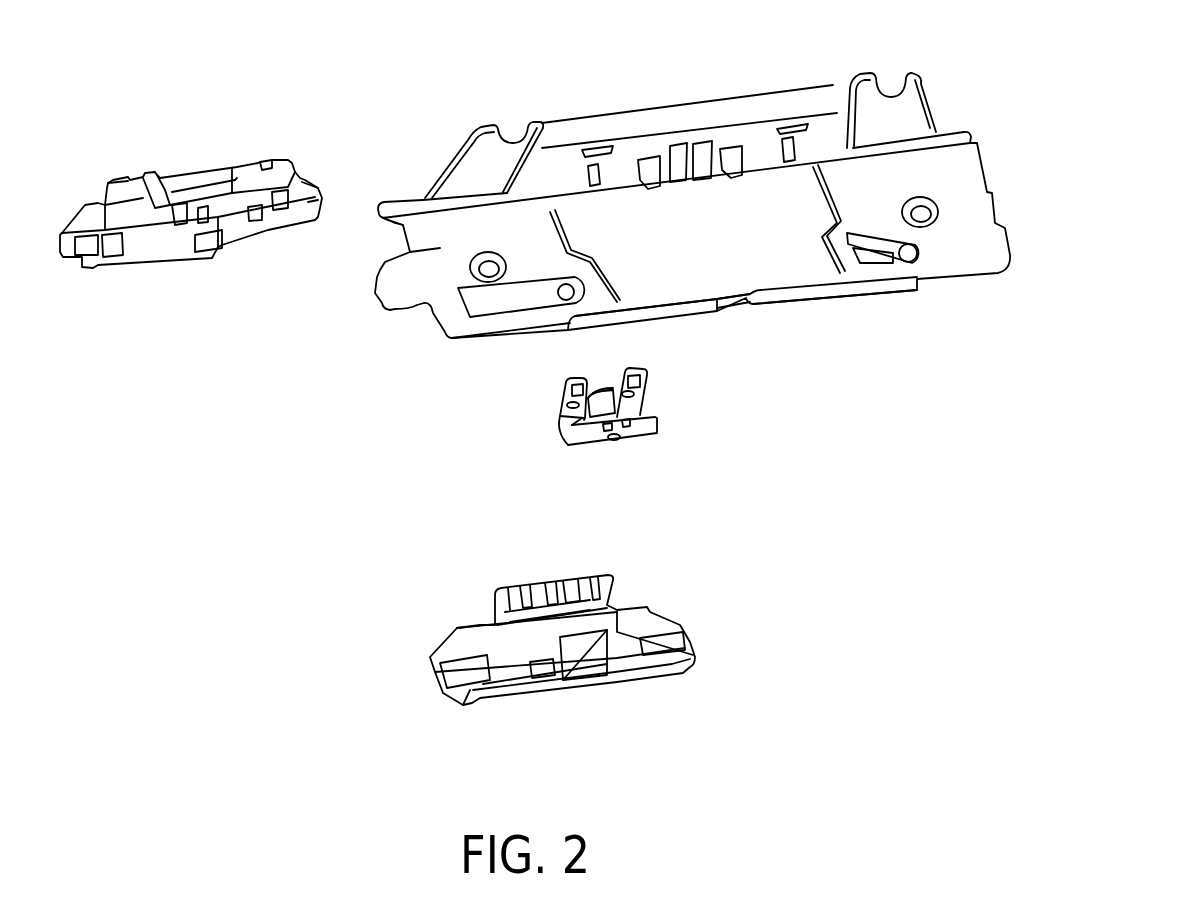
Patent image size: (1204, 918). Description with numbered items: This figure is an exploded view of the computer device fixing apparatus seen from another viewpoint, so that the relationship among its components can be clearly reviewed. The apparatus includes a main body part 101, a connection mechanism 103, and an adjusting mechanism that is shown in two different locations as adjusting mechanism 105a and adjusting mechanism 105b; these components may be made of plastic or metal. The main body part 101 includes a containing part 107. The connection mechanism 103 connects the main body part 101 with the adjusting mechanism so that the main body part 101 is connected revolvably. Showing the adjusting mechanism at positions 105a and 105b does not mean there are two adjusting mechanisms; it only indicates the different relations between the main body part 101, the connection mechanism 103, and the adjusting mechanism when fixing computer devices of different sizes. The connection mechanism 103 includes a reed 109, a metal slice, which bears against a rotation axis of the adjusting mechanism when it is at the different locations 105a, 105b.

The main body part 101 is at (963, 180).
The connection mechanism 103 is at (573, 422).
The adjusting mechanism (at first location) 105a is at (672, 668).
The adjusting mechanism (at second location) 105b is at (305, 183).
The containing part 107 is at (723, 265).
The reed 109 is at (608, 383).